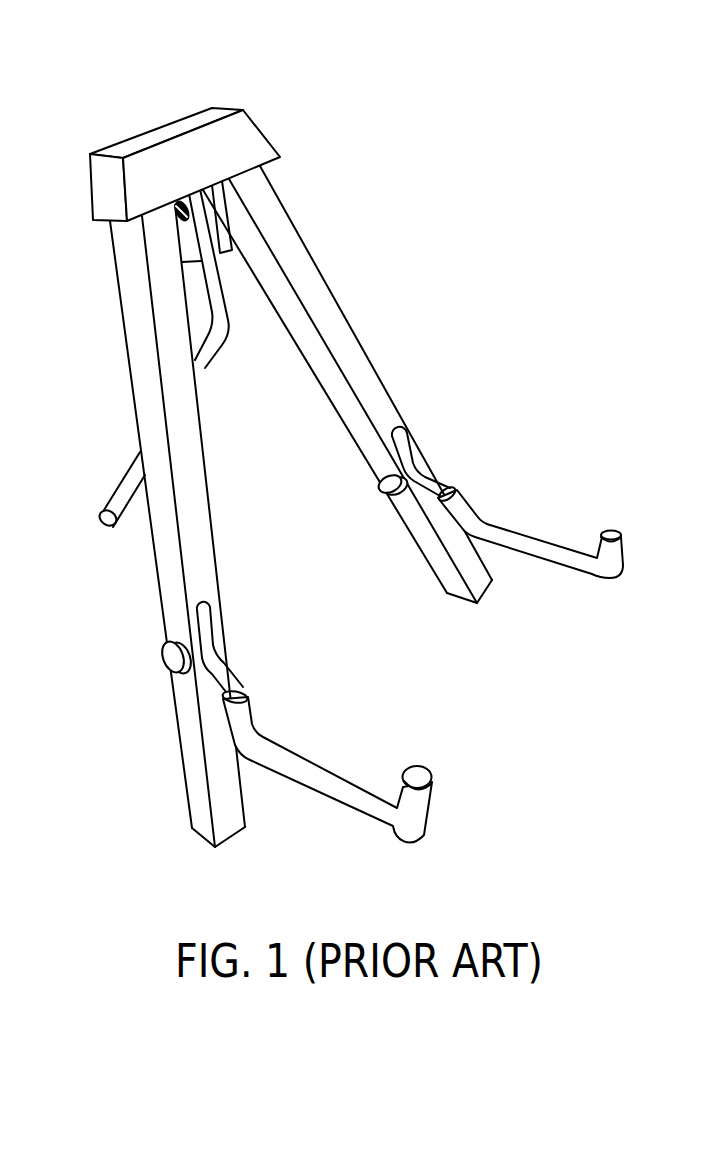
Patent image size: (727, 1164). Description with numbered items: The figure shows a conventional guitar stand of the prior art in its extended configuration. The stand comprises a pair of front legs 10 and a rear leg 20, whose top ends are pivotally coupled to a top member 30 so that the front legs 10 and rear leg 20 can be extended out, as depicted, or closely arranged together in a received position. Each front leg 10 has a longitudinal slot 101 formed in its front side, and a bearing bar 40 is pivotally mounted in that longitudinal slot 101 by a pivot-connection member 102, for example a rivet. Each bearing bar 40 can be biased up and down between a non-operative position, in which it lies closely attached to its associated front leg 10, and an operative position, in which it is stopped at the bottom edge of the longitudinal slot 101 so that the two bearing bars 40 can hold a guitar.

The front leg 10 is at (130, 369).
The rear leg 20 is at (205, 368).
The top member 30 is at (170, 123).
The bearing bar 40 is at (303, 763).
The longitudinal slot 101 is at (203, 625).
The pivot-connection member 102 is at (163, 658).